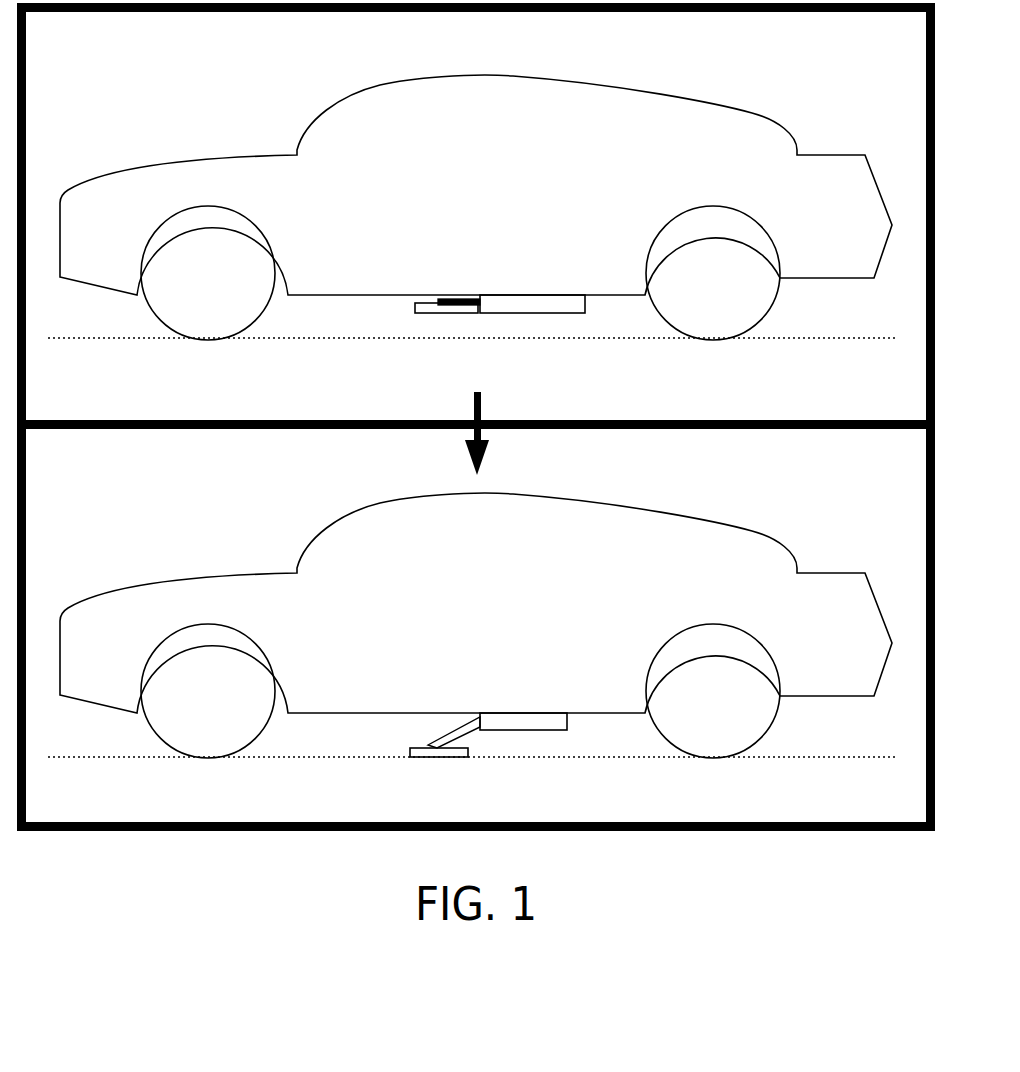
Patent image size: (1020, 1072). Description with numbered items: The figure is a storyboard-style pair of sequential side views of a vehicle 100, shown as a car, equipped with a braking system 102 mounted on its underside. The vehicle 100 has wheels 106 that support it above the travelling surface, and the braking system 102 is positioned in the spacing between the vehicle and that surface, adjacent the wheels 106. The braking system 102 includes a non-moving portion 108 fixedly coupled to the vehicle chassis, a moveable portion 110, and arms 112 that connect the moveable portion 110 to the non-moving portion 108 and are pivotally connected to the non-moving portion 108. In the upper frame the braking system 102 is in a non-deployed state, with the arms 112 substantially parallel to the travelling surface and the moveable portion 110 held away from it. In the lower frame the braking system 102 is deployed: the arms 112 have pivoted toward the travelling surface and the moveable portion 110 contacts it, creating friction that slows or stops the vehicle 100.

The vehicle 100 is at (752, 114).
The braking system 102 is at (495, 331).
The wheels 106 is at (242, 308).
The non-moving portion 108 is at (528, 313).
The moveable portion 110 is at (427, 308).
The arms 112 is at (478, 307).